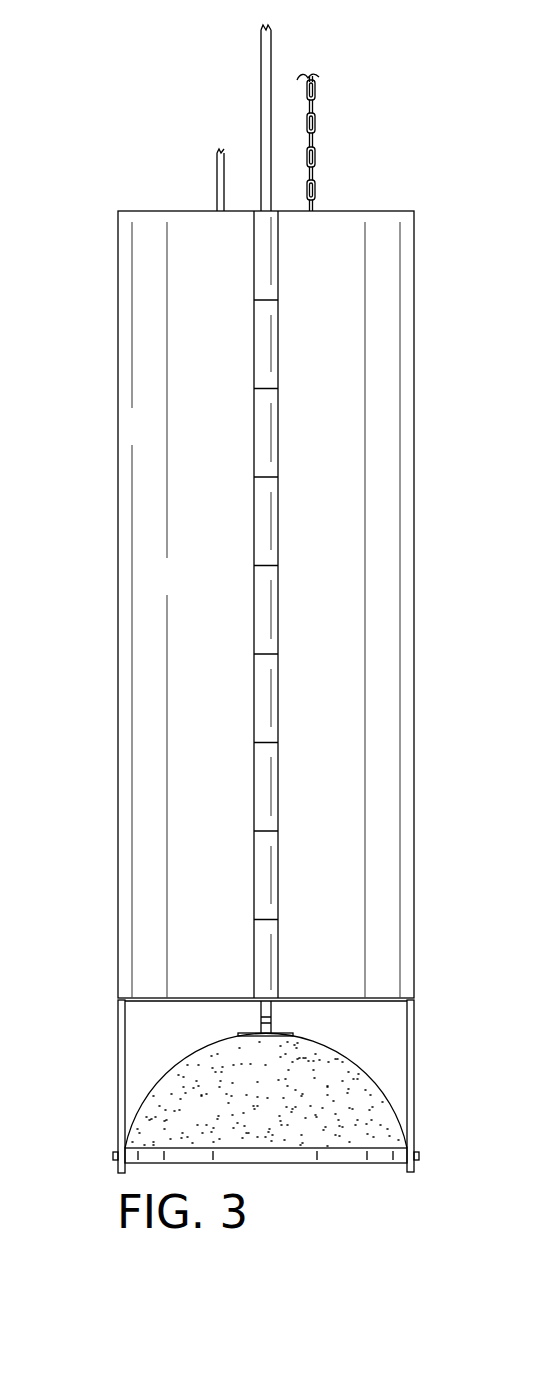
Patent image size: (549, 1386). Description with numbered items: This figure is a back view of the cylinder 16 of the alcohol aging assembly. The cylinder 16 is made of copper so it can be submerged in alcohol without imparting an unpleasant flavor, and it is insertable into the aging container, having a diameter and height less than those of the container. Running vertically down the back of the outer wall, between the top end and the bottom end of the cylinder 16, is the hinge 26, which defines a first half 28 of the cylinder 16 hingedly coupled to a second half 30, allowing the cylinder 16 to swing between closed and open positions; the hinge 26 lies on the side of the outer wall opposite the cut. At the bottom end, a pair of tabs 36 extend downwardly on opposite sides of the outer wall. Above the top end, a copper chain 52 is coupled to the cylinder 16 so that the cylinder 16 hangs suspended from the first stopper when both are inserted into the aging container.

The cylinder 16 is at (118, 296).
The hinge 26 is at (254, 672).
The first half 28 is at (378, 455).
The second half 30 is at (178, 465).
The tabs 36 is at (118, 1052).
The chain 52 is at (315, 153).